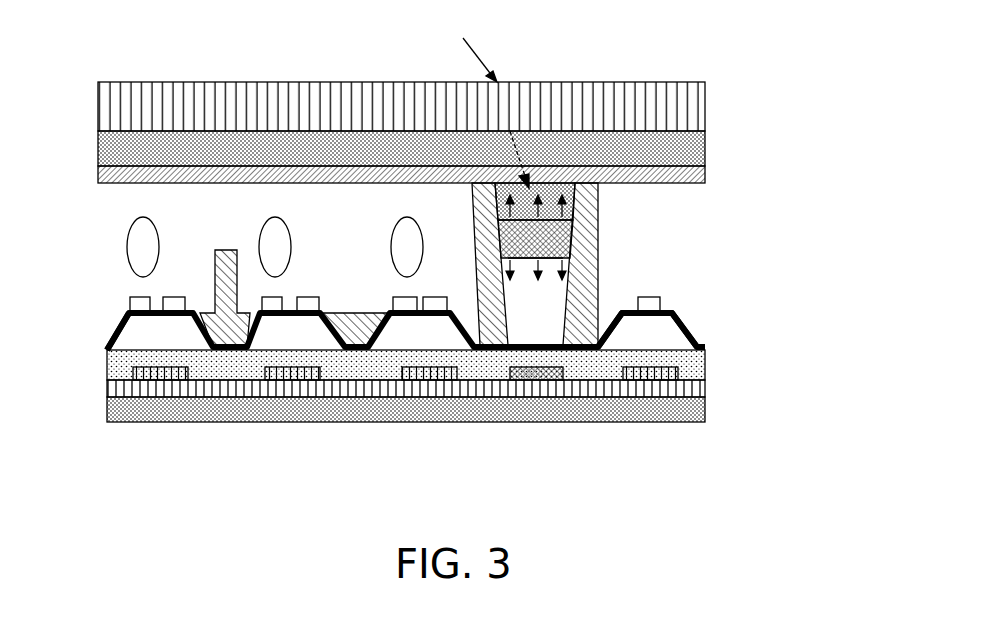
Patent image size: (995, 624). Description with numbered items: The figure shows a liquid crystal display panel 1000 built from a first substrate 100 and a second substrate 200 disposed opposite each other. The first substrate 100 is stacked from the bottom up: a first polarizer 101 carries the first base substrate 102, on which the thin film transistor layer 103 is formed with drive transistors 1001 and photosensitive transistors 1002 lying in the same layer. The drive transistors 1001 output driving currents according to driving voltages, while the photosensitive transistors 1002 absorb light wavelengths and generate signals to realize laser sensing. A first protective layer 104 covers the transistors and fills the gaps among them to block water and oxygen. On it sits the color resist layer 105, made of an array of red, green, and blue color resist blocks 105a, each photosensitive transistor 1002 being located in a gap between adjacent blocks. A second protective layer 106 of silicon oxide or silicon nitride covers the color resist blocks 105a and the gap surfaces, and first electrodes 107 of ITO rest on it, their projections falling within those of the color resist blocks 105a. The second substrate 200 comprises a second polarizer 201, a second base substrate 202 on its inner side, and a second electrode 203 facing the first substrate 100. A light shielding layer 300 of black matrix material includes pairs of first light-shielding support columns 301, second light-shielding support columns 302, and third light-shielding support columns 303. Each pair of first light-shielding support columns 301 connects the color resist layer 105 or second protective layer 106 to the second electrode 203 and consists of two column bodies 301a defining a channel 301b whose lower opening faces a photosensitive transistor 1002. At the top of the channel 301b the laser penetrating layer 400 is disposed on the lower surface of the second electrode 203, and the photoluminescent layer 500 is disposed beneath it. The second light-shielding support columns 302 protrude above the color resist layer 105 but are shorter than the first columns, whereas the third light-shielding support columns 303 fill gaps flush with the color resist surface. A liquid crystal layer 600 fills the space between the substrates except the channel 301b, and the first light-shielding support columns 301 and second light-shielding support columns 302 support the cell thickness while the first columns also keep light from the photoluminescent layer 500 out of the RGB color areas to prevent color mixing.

The display panel 1000 is at (107, 21).
The second substrate 200 is at (795, 88).
The second polarizer 201 is at (689, 112).
The second base substrate 202 is at (690, 152).
The second electrode 203 is at (690, 174).
The laser penetrating layer 400 is at (568, 212).
The photoluminescent layer 500 is at (570, 246).
The liquid crystal layer 600 is at (127, 249).
The first substrate 100 is at (800, 267).
The first polarizer 101 is at (700, 416).
The first base substrate 102 is at (695, 390).
The thin film transistor layer 103 is at (742, 423).
The drive transistors 1001 is at (647, 382).
The photosensitive transistors 1002 is at (623, 417).
The first protective layer 104 is at (690, 367).
The color resist layer 105 is at (690, 348).
The color resist blocks 105a is at (143, 342).
The second protective layer 106 is at (687, 330).
The first electrodes 107 is at (660, 306).
The light shielding layer 300 is at (487, 458).
The first light-shielding support columns 301 is at (489, 300).
The column bodies 301a is at (472, 446).
The channel 301b is at (527, 320).
The second light-shielding support columns 302 is at (226, 312).
The third light-shielding support columns 303 is at (362, 322).